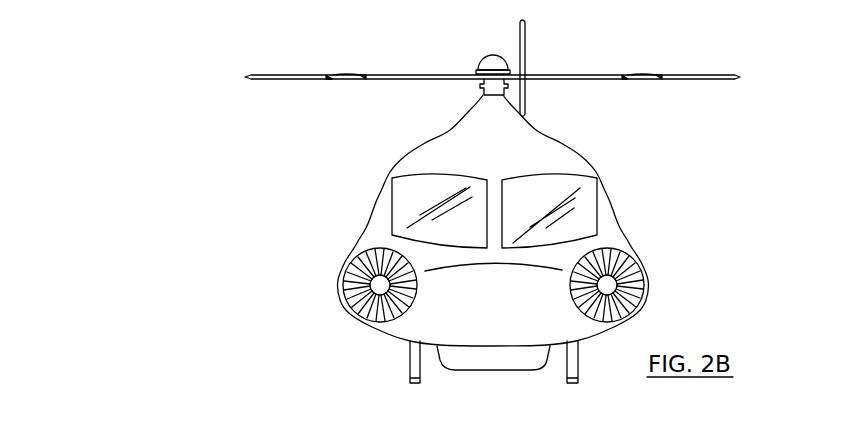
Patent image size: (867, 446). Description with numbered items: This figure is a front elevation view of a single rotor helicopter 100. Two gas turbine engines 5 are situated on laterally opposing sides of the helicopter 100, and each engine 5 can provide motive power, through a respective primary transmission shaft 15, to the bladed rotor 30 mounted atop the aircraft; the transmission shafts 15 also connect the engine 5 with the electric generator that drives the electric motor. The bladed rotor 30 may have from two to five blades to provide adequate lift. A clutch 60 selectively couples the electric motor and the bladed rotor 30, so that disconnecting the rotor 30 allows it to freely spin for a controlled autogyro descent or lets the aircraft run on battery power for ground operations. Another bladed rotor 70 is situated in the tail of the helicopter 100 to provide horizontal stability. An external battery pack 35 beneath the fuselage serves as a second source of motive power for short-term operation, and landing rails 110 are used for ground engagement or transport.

The single rotor helicopter 100 is at (573, 160).
The bladed rotor 30 is at (487, 62).
The clutch 60 is at (483, 90).
The bladed rotor 70 is at (522, 66).
The primary transmission shaft 15 is at (375, 257).
The gas turbine engine 5 is at (345, 305).
The external battery pack 35 is at (497, 362).
The landing rails 110 is at (577, 380).